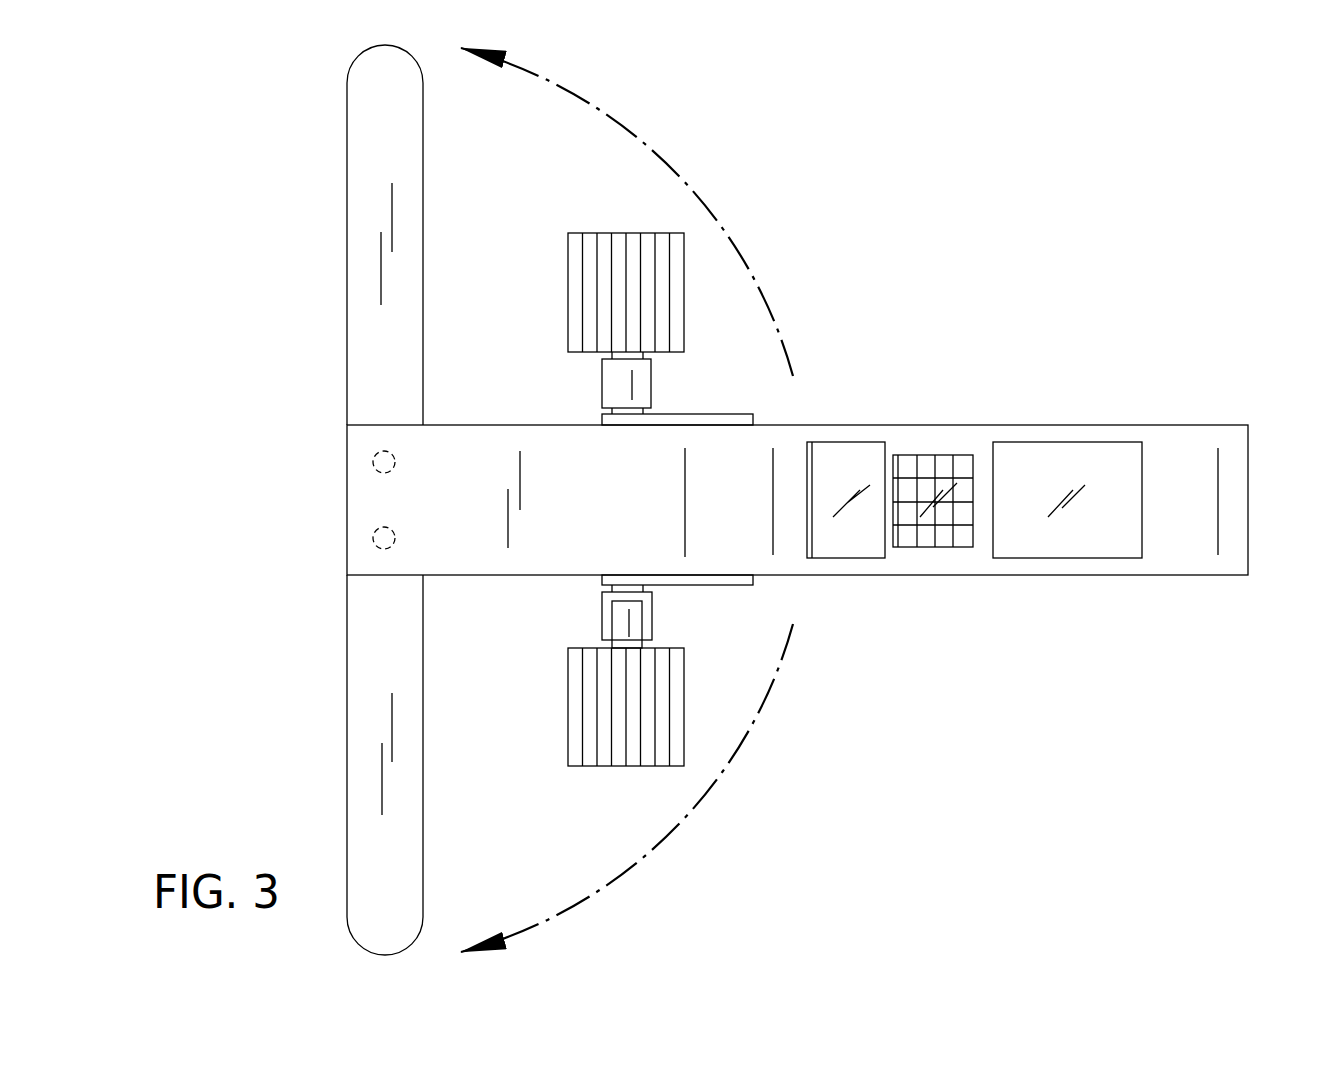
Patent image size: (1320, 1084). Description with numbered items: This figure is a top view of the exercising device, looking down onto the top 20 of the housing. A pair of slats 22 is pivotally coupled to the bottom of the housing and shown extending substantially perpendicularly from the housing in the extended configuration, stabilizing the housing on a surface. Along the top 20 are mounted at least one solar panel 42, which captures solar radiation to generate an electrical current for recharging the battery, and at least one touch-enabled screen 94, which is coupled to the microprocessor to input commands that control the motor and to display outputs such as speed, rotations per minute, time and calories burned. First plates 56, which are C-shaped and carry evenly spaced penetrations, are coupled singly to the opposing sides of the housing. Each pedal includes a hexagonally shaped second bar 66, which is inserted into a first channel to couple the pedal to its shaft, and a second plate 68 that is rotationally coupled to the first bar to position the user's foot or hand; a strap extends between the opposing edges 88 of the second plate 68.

The top 20 is at (631, 520).
The slats 22 is at (367, 310).
The solar panel 42 is at (942, 547).
The first plates 56 is at (723, 588).
The second bar 66 is at (613, 381).
The second plate 68 is at (618, 278).
The opposing edges 88 is at (665, 647).
The screen 94 is at (1022, 453).